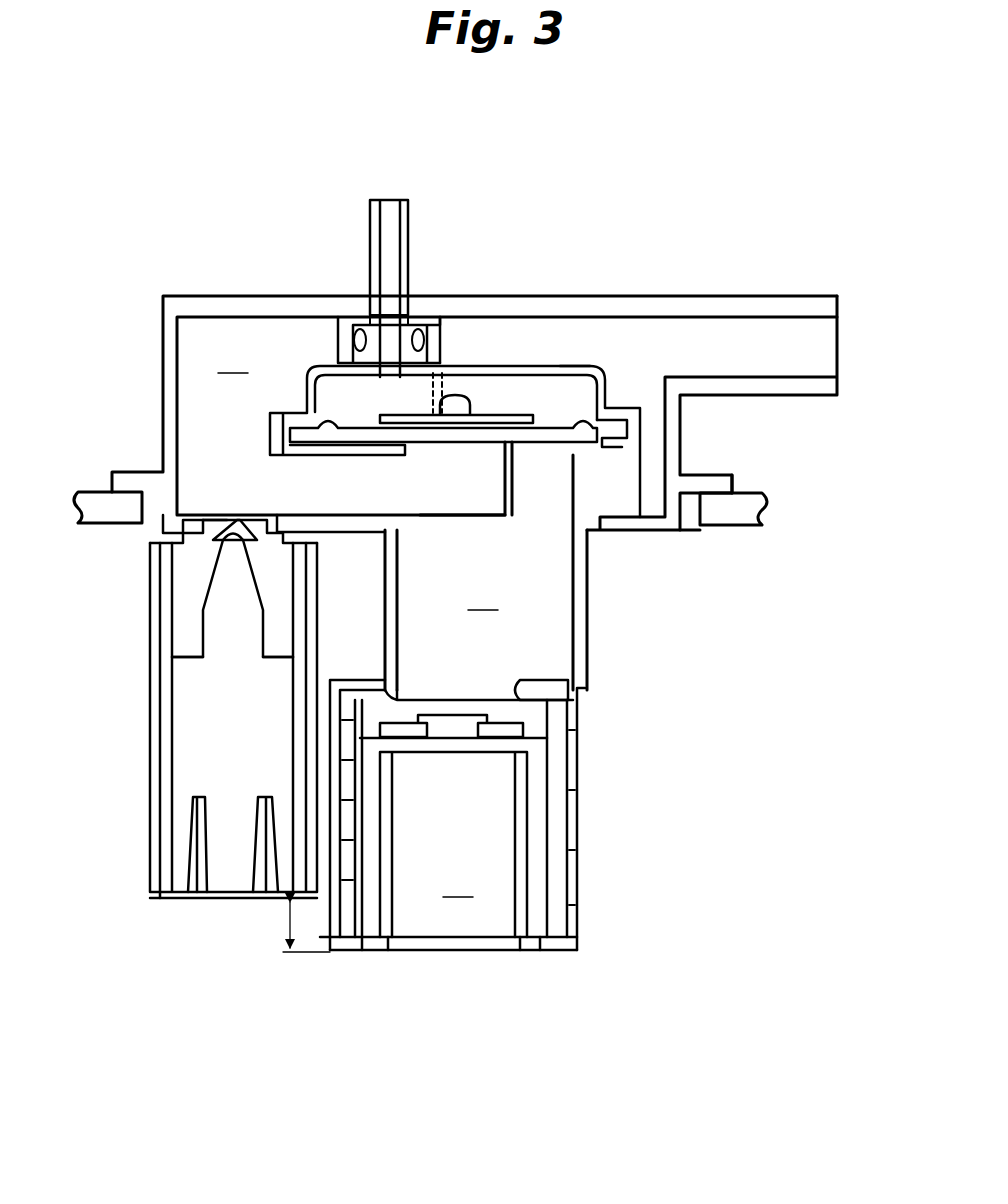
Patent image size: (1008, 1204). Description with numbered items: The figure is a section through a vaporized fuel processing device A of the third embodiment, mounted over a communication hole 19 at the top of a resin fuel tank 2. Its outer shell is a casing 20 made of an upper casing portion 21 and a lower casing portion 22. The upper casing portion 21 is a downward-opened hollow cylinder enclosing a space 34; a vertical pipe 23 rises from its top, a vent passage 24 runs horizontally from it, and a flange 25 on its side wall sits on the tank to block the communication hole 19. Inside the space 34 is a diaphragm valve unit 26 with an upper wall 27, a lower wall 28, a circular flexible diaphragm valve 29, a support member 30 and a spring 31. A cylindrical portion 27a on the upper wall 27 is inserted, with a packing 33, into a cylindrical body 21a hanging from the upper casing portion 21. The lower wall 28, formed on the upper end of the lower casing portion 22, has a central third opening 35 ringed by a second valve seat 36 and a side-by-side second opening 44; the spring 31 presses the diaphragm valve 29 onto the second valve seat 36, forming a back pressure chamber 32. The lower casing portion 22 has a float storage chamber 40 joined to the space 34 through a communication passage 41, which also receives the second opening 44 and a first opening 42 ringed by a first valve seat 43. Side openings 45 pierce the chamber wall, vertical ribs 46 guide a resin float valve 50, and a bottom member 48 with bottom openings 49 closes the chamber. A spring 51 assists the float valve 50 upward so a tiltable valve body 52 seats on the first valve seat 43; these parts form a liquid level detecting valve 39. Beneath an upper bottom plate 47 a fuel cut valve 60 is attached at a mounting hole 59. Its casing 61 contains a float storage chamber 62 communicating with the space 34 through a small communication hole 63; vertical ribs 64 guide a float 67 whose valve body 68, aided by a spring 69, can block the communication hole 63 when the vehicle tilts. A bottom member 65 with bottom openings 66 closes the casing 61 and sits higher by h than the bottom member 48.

The vaporized fuel processing device A is at (158, 285).
The fuel tank 2 is at (760, 525).
The communication hole 19 is at (690, 530).
The casing 20 is at (608, 628).
The upper casing portion 21 is at (255, 296).
The cylindrical body 21a is at (437, 320).
The lower casing portion 22 is at (587, 772).
The vertical pipe 23 is at (400, 200).
The vent passage 24 is at (762, 296).
The flange 25 is at (732, 483).
The diaphragm valve unit 26 is at (565, 366).
The upper wall 27 is at (300, 410).
The cylindrical portion 27a is at (403, 378).
The lower wall 28 is at (290, 436).
The diaphragm valve 29 is at (612, 420).
The support member 30 is at (458, 395).
The spring 31 is at (482, 393).
The back pressure chamber 32 is at (325, 383).
The packing 33 is at (360, 328).
The space 34 is at (234, 361).
The third opening 35 is at (455, 455).
The second valve seat 36 is at (600, 527).
The liquid level detecting valve 39 is at (590, 950).
The float storage chamber 40 is at (453, 844).
The communication passage 41 is at (442, 610).
The first opening 42 is at (455, 700).
The first valve seat 43 is at (568, 690).
The second opening 44 is at (540, 445).
The side openings 45 is at (569, 853).
The vertical ribs 46 is at (559, 920).
The upper bottom plate 47 is at (350, 532).
The bottom member 48 is at (450, 950).
The bottom openings 49 is at (375, 950).
The float valve 50 is at (557, 820).
The spring 51 is at (529, 888).
The valve body 52 is at (523, 732).
The mounting hole 59 is at (188, 532).
The fuel cut valve 60 is at (142, 900).
The casing 61 is at (150, 800).
The float storage chamber 62 is at (185, 640).
The communication hole 63 is at (232, 520).
The vertical ribs 64 is at (165, 752).
The bottom member 65 is at (233, 898).
The bottom openings 66 is at (175, 898).
The float 67 is at (185, 702).
The valve body 68 is at (213, 583).
The spring 69 is at (195, 860).
The height difference h is at (305, 927).